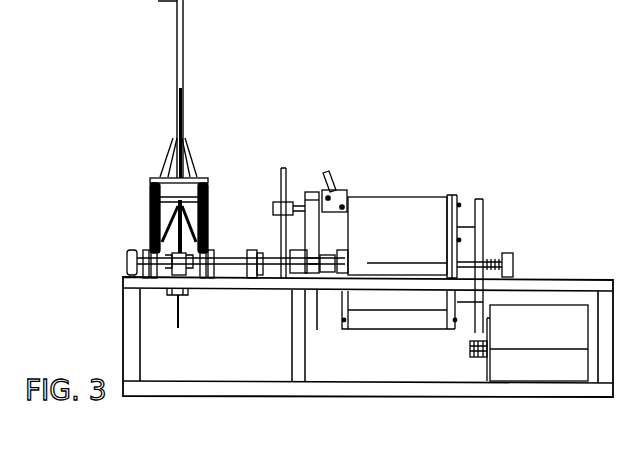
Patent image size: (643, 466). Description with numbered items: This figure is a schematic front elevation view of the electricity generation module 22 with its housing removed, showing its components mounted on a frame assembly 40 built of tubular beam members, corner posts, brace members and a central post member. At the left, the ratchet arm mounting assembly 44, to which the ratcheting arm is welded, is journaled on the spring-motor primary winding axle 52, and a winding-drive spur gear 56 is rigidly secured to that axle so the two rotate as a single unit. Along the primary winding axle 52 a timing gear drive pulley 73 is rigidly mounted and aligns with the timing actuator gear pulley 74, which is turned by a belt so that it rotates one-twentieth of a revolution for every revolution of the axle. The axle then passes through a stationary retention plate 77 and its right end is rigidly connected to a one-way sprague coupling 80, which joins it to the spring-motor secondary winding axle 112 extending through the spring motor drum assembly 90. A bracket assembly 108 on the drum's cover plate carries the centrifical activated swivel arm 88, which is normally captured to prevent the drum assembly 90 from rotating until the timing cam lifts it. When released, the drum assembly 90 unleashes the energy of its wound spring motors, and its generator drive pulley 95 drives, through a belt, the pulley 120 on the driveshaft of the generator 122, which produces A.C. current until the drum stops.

The electricity generation module 22 is at (503, 90).
The frame assembly 40 is at (614, 304).
The ratchet arm mounting assembly 44 is at (152, 178).
The spring-motor primary winding axle 52 is at (230, 268).
The winding-drive spur gear 56 is at (175, 313).
The timing gear drive pulley 73 is at (272, 270).
The timing actuator gear pulley 74 is at (280, 185).
The stationary retention plate 77 is at (310, 328).
The one-way sprague coupling 80 is at (325, 278).
The centrifical activated swivel arm 88 is at (332, 183).
The spring motor drum assembly 90 is at (427, 190).
The generator drive pulley 95 is at (484, 208).
The bracket assembly 108 is at (337, 205).
The spring-motor secondary winding axle 112 is at (520, 264).
The pulley 120 is at (472, 355).
The generator 122 is at (565, 339).